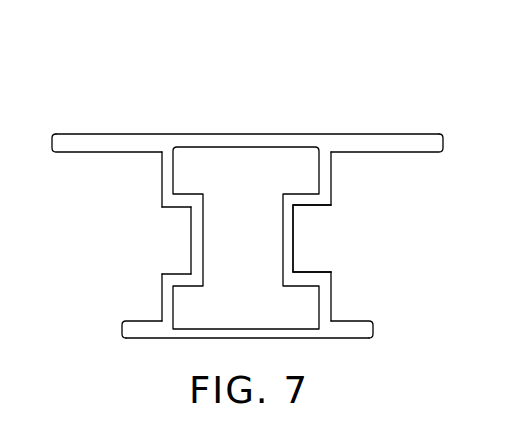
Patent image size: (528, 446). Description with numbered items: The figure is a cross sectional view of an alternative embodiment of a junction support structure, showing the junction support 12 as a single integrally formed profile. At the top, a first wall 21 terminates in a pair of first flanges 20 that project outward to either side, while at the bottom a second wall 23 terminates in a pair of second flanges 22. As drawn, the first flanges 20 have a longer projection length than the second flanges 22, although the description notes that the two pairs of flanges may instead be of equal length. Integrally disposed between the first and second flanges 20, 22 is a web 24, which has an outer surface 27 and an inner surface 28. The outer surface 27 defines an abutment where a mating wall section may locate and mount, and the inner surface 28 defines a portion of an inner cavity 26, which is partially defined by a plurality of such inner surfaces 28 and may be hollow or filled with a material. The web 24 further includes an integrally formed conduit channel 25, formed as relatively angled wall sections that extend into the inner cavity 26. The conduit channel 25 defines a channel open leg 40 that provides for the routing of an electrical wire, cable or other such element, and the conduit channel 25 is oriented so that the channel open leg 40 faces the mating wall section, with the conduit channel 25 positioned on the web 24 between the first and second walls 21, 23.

The junction support 12 is at (132, 105).
The first flanges 20 is at (69, 146).
The first wall 21 is at (245, 133).
The second flanges 22 is at (133, 328).
The second wall 23 is at (215, 342).
The web 24 is at (167, 176).
The conduit channel 25 is at (340, 236).
The inner cavity 26 is at (250, 232).
The outer surface 27 is at (333, 293).
The inner surface 28 is at (169, 204).
The channel open leg 40 is at (318, 234).